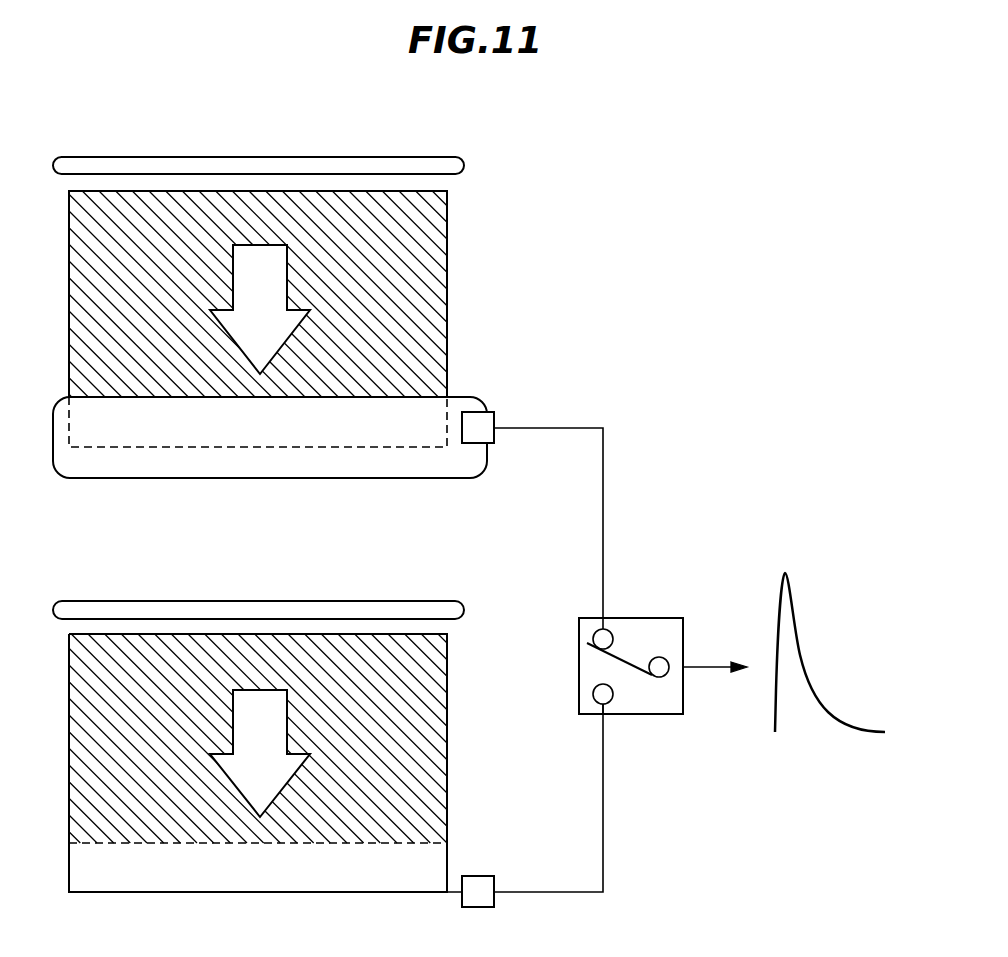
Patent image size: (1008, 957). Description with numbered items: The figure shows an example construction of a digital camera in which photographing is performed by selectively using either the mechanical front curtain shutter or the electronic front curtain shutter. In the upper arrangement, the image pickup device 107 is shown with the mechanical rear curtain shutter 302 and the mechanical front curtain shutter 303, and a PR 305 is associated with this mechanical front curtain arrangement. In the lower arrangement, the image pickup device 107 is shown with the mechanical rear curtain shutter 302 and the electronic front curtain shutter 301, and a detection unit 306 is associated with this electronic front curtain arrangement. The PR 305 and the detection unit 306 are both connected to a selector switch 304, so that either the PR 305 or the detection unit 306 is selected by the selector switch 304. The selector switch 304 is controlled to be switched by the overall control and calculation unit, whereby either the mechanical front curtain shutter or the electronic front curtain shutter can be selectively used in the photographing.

The image pickup device 107 is at (447, 270).
The electronic front curtain shutter 301 is at (405, 882).
The mechanical rear curtain shutter 302 is at (416, 162).
The mechanical front curtain shutter 303 is at (248, 466).
The selector switch 304 is at (657, 616).
The PR 305 is at (496, 418).
The detection unit 306 is at (497, 881).